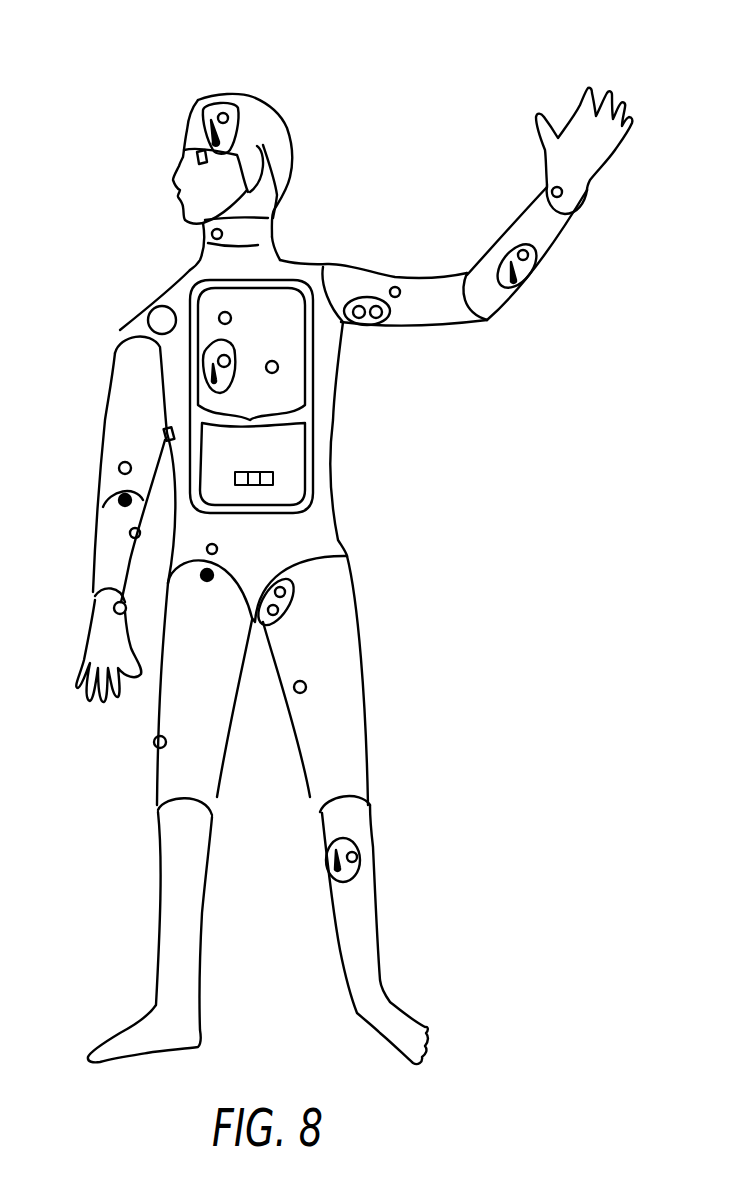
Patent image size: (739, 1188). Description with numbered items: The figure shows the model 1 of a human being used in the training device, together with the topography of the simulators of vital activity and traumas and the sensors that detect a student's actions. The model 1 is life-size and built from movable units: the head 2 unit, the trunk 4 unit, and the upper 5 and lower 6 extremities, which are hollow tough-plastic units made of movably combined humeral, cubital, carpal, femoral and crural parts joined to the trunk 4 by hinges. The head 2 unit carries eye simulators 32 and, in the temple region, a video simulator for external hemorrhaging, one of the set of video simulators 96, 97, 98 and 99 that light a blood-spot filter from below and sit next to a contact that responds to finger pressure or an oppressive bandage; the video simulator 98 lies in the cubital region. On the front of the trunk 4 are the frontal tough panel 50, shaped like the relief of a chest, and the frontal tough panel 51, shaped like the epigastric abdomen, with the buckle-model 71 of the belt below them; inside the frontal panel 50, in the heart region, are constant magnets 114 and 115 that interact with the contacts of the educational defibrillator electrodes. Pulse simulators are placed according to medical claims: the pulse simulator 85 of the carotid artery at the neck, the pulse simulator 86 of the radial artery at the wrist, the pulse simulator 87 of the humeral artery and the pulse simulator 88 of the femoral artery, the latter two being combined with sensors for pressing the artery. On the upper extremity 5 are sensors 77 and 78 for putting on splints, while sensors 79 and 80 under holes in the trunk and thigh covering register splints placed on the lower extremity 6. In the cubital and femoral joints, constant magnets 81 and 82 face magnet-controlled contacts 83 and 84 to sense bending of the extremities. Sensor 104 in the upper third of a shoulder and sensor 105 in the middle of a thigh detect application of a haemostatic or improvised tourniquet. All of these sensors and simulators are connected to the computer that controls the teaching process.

The model of a human being 1 is at (310, 99).
The head unit 2 is at (280, 147).
The trunk unit 4 is at (292, 262).
The upper extremity 5 is at (130, 350).
The lower extremity 6 is at (173, 887).
The eye simulator 32 is at (193, 153).
The frontal tough panel 50 is at (293, 345).
The frontal tough panel 51 is at (292, 443).
The buckle-model of the belt 71 is at (280, 478).
The sensor for putting on splints 77 is at (130, 536).
The sensor for putting on splints 78 is at (114, 611).
The sensor for putting splints on the lower extremity 79 is at (163, 434).
The sensor for putting splints on the lower extremity 80 is at (153, 745).
The constant magnet 81 is at (118, 503).
The constant magnet 82 is at (207, 581).
The contact controlled by a magnet 83 is at (119, 469).
The contact controlled by a magnet 84 is at (218, 547).
The pulse simulator of the carotid artery 85 is at (211, 232).
The pulse simulator of the radial artery 86 is at (562, 193).
The pulse simulator of the humeral artery 87 is at (372, 325).
The pulse simulator of the femoral artery 88 is at (294, 600).
The video simulator for external hemorrhaging 96 is at (218, 100).
The video simulator for external hemorrhaging 97 is at (200, 370).
The video simulator for external hemorrhaging 98 is at (531, 275).
The video simulator for external hemorrhaging 99 is at (362, 852).
The sensor for putting on a tourniquet 104 is at (399, 286).
The sensor for putting on a tourniquet 105 is at (306, 686).
The constant magnet 114 is at (221, 313).
The constant magnet 115 is at (278, 368).